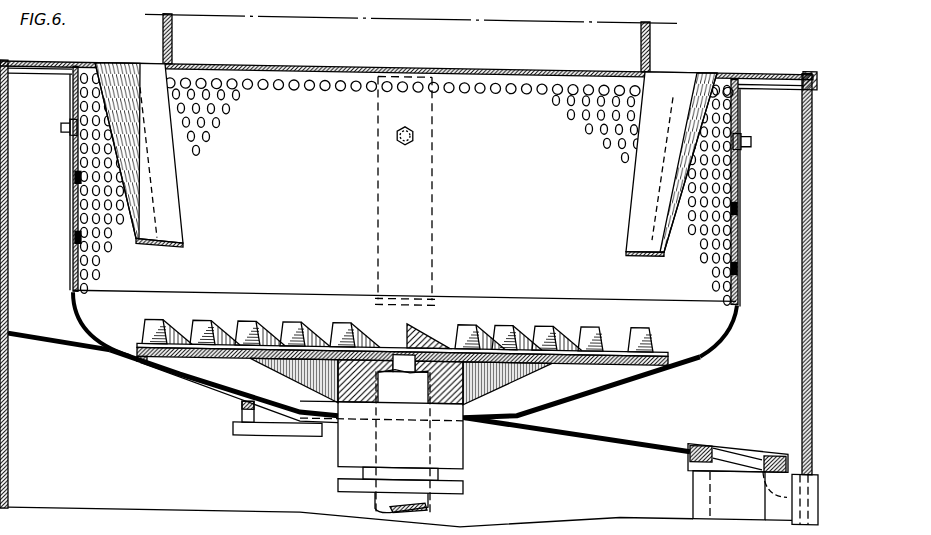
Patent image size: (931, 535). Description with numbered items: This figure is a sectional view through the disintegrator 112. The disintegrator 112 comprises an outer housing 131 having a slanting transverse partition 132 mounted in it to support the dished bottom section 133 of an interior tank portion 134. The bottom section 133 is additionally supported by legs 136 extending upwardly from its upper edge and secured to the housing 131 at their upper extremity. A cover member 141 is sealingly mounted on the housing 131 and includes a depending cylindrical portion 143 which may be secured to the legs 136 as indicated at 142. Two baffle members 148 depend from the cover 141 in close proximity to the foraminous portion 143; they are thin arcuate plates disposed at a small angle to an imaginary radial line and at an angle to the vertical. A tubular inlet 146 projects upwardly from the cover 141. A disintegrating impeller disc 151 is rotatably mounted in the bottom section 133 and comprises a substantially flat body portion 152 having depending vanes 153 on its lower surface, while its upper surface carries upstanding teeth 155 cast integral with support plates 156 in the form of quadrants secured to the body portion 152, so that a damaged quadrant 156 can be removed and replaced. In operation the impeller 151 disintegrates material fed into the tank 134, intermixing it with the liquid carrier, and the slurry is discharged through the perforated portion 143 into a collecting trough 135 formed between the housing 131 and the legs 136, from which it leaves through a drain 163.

The disintegrator 112 is at (712, 56).
The outer housing 131 is at (14, 192).
The slanting transverse partition 132 is at (621, 431).
The dished bottom section 133 is at (689, 352).
The interior tank portion 134 is at (755, 367).
The collecting trough 135 is at (52, 218).
The legs 136 is at (72, 231).
The cover member 141 is at (112, 60).
The securing point 142 is at (61, 127).
The depending cylindrical portion 143 is at (72, 266).
The tubular inlet 146 is at (649, 50).
The baffle members 148 is at (184, 220).
The disintegrating impeller disc 151 is at (668, 340).
The body portion 152 is at (130, 349).
The depending vanes 153 is at (228, 378).
The upstanding teeth 155 is at (249, 317).
The support plates 156 is at (320, 317).
The drain 163 is at (747, 452).